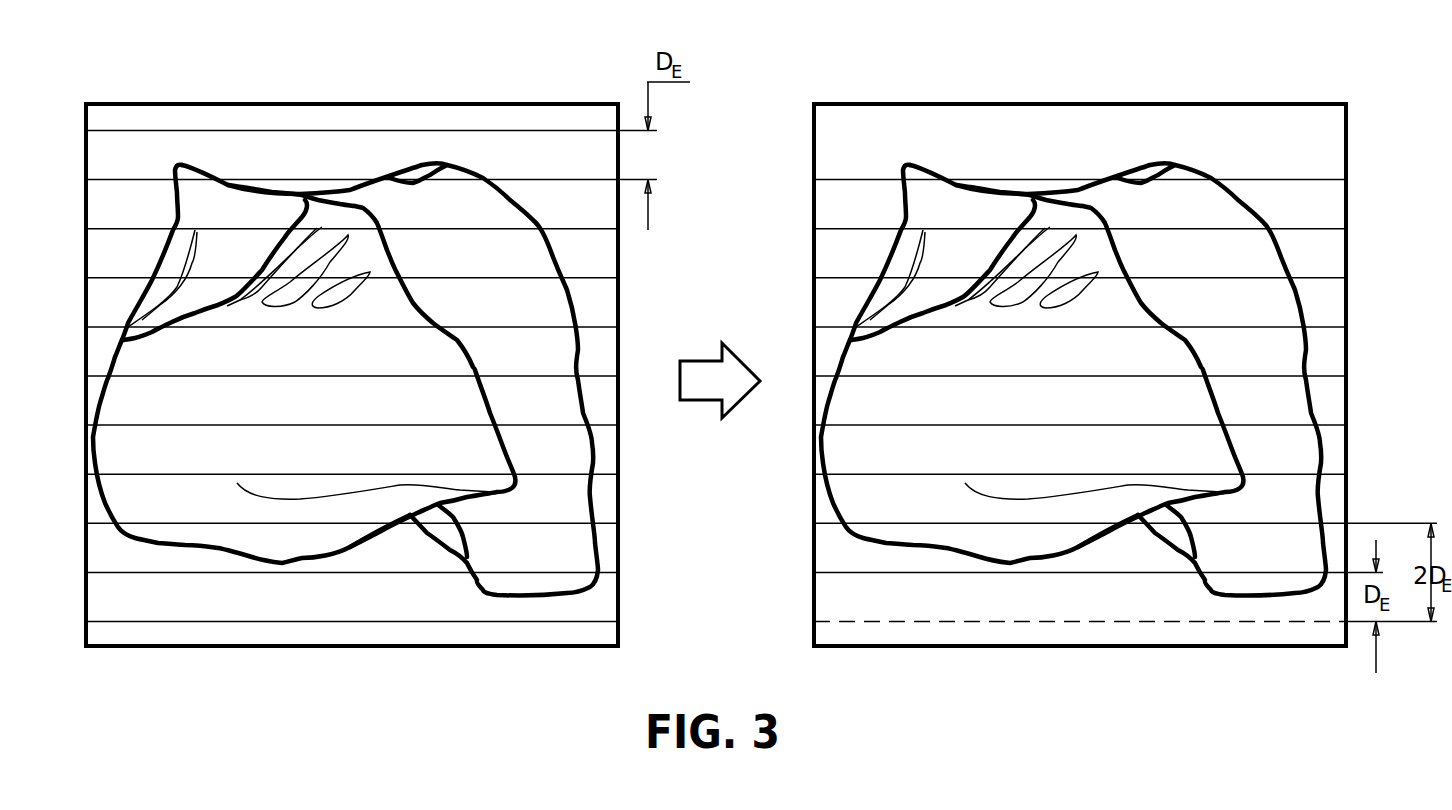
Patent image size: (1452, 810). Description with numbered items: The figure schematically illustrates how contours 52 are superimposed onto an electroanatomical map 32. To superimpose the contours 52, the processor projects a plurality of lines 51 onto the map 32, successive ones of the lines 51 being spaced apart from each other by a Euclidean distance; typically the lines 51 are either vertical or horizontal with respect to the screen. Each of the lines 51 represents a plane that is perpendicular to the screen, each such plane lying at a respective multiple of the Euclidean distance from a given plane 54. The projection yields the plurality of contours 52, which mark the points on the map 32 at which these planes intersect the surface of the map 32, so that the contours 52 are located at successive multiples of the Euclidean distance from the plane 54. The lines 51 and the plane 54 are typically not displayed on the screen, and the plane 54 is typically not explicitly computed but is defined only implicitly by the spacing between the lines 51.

The lines 51 is at (246, 131).
The contours 52 is at (1183, 180).
The electroanatomical map 32 is at (572, 498).
The plane 54 is at (1183, 622).